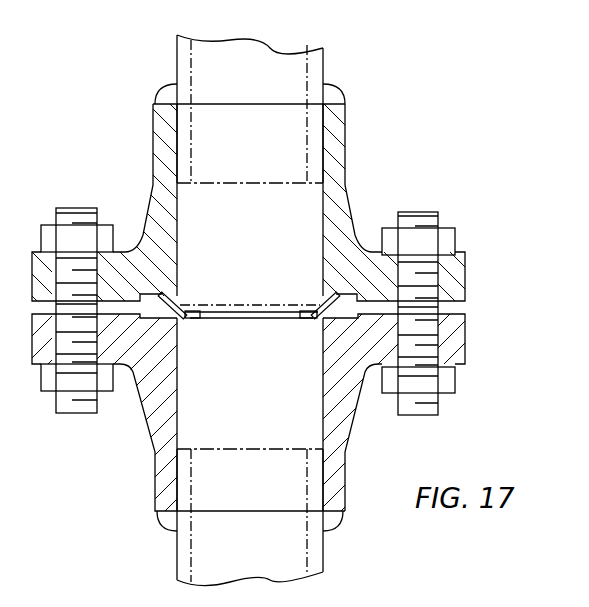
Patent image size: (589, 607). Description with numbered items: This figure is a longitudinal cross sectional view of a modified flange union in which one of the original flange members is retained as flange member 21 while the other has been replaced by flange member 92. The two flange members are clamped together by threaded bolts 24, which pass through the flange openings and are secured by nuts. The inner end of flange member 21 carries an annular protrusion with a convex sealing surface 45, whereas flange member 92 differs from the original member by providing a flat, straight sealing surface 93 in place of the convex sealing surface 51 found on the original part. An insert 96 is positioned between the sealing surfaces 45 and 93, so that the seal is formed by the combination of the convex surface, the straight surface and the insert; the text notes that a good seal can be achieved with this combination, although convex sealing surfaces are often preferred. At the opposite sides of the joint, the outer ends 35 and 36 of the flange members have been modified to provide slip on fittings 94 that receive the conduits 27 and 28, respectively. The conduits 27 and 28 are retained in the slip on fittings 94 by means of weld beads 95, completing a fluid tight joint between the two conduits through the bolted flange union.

The flange member 21 is at (348, 175).
The threaded bolt 24 is at (440, 212).
The conduit 27 is at (323, 72).
The conduit 28 is at (323, 558).
The outer end 35 is at (155, 142).
The outer end 36 is at (337, 477).
The convex sealing surface 45 is at (180, 297).
The convex sealing surface 51 is at (330, 300).
The flange member 92 is at (342, 422).
The straight sealing surface 93 is at (197, 316).
The slip on fitting 94 is at (323, 135).
The weld bead 95 is at (323, 90).
The insert 96 is at (248, 315).